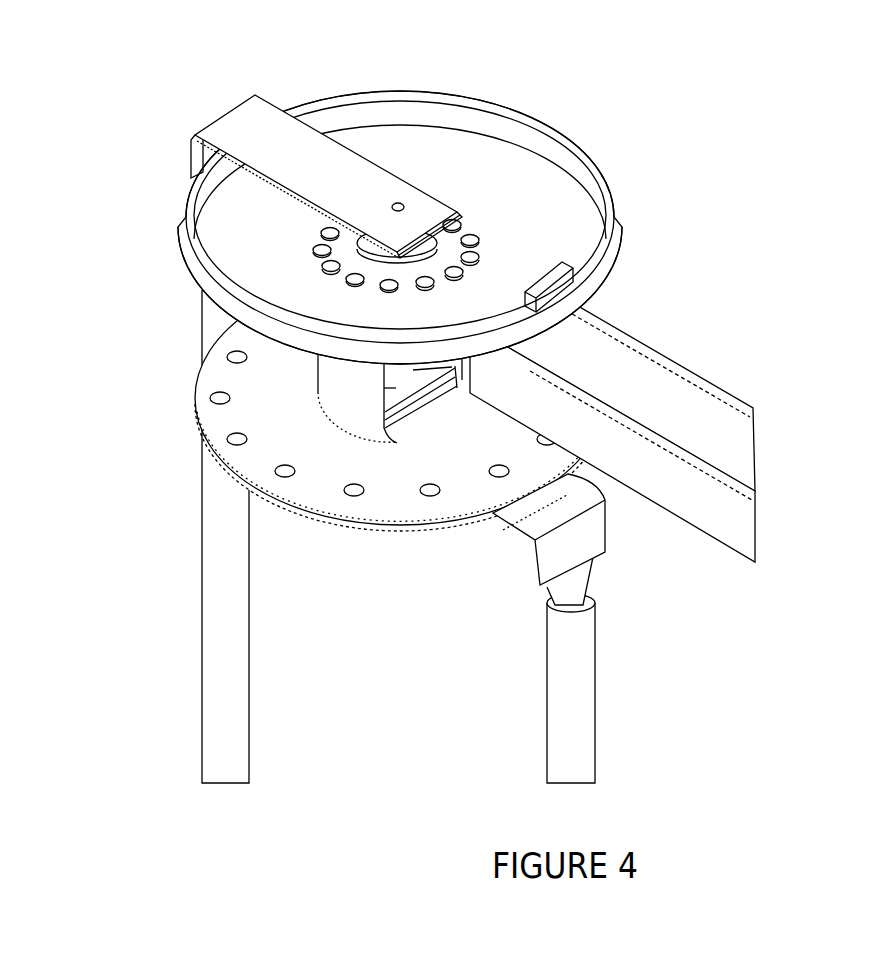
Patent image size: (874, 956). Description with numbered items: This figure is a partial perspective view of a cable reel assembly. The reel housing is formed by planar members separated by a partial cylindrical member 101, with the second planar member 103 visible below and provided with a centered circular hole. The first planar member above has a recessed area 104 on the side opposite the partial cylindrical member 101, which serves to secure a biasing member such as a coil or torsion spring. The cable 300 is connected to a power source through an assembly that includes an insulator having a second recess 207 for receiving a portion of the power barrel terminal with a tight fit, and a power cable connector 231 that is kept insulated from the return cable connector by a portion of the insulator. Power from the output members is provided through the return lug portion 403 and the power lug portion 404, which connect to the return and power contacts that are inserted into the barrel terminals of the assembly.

The top plate 104 is at (473, 162).
The bar 403 is at (258, 121).
The channel 300 is at (675, 362).
The column 101 is at (360, 388).
The bearing 231 is at (404, 380).
The stacked plates 207 is at (405, 375).
The base flange 103 is at (340, 525).
The bracket 404 is at (566, 512).